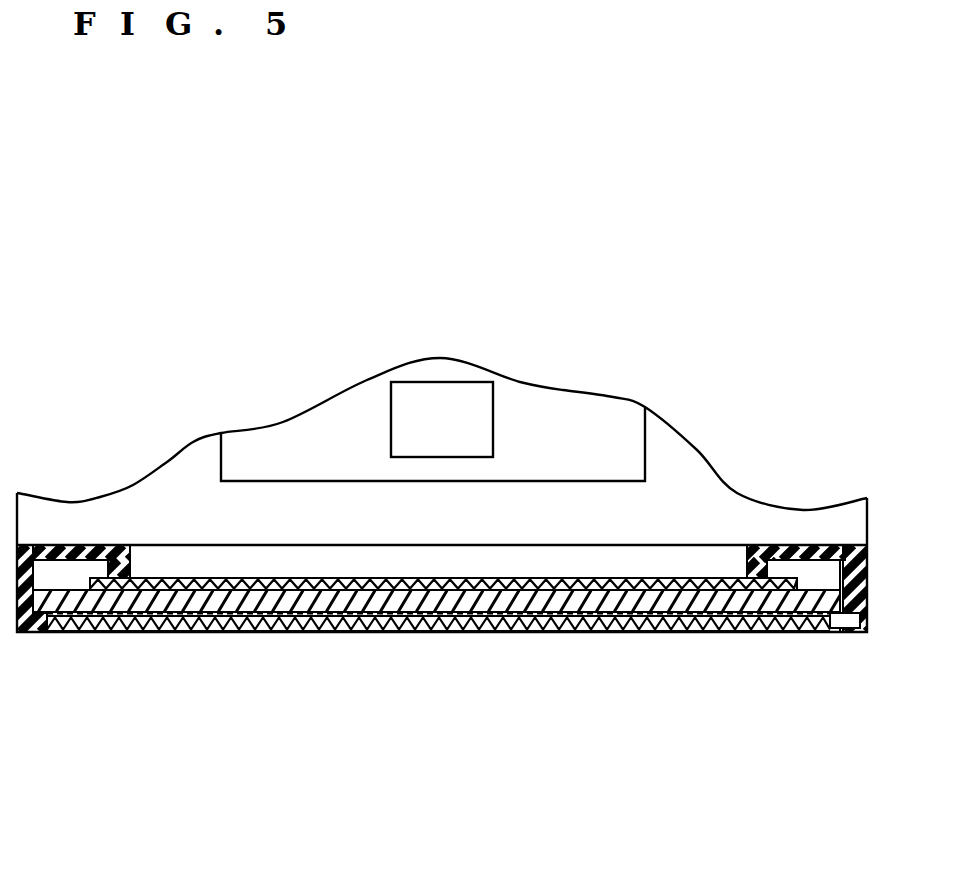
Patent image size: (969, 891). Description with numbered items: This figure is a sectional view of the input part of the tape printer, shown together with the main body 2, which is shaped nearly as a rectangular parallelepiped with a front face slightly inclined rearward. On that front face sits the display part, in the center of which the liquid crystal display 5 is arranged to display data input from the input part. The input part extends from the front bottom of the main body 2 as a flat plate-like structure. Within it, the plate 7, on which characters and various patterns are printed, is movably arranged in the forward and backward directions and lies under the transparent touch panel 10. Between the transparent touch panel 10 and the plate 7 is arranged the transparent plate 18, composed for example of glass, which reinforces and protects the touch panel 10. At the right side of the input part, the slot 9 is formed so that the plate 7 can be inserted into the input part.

The main body 2 is at (683, 482).
The liquid crystal display 5 is at (480, 427).
The plate 7 is at (388, 623).
The slot 9 is at (832, 632).
The transparent touch panel 10 is at (593, 580).
The transparent plate 18 is at (310, 603).